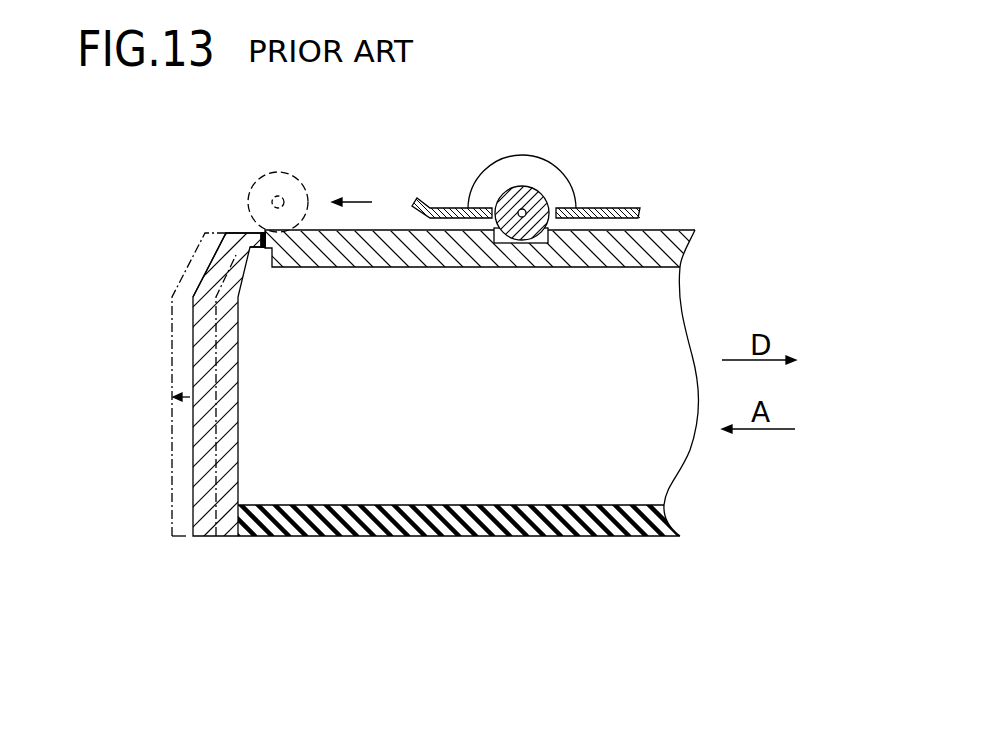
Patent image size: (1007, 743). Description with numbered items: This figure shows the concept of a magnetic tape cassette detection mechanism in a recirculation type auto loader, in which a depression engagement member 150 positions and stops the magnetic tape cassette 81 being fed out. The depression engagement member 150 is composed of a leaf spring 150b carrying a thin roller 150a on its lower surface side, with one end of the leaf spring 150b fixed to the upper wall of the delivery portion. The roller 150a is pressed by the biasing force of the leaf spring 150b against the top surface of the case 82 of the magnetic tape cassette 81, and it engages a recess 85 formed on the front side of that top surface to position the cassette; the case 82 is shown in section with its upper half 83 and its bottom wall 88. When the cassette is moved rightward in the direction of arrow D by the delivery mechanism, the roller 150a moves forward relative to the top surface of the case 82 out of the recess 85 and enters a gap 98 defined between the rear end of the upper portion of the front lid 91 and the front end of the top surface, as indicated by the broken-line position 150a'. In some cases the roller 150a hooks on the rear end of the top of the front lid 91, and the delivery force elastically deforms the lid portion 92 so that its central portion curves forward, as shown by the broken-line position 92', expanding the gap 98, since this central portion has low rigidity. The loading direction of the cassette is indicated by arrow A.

The magnetic tape cassette 81 is at (730, 152).
The case 82 is at (683, 294).
The upper half 83 is at (402, 255).
The recess 85 is at (562, 248).
The bottom wall of container 88 is at (451, 550).
The front lid 91 is at (195, 279).
The lid portion 92 is at (256, 392).
The lid portion in deformed state 92' is at (160, 384).
The gap 98 is at (265, 231).
The depression engagement member 150 is at (548, 160).
The roller 150a is at (480, 217).
The roller in advanced position 150a' is at (319, 170).
The leaf spring 150b is at (595, 208).